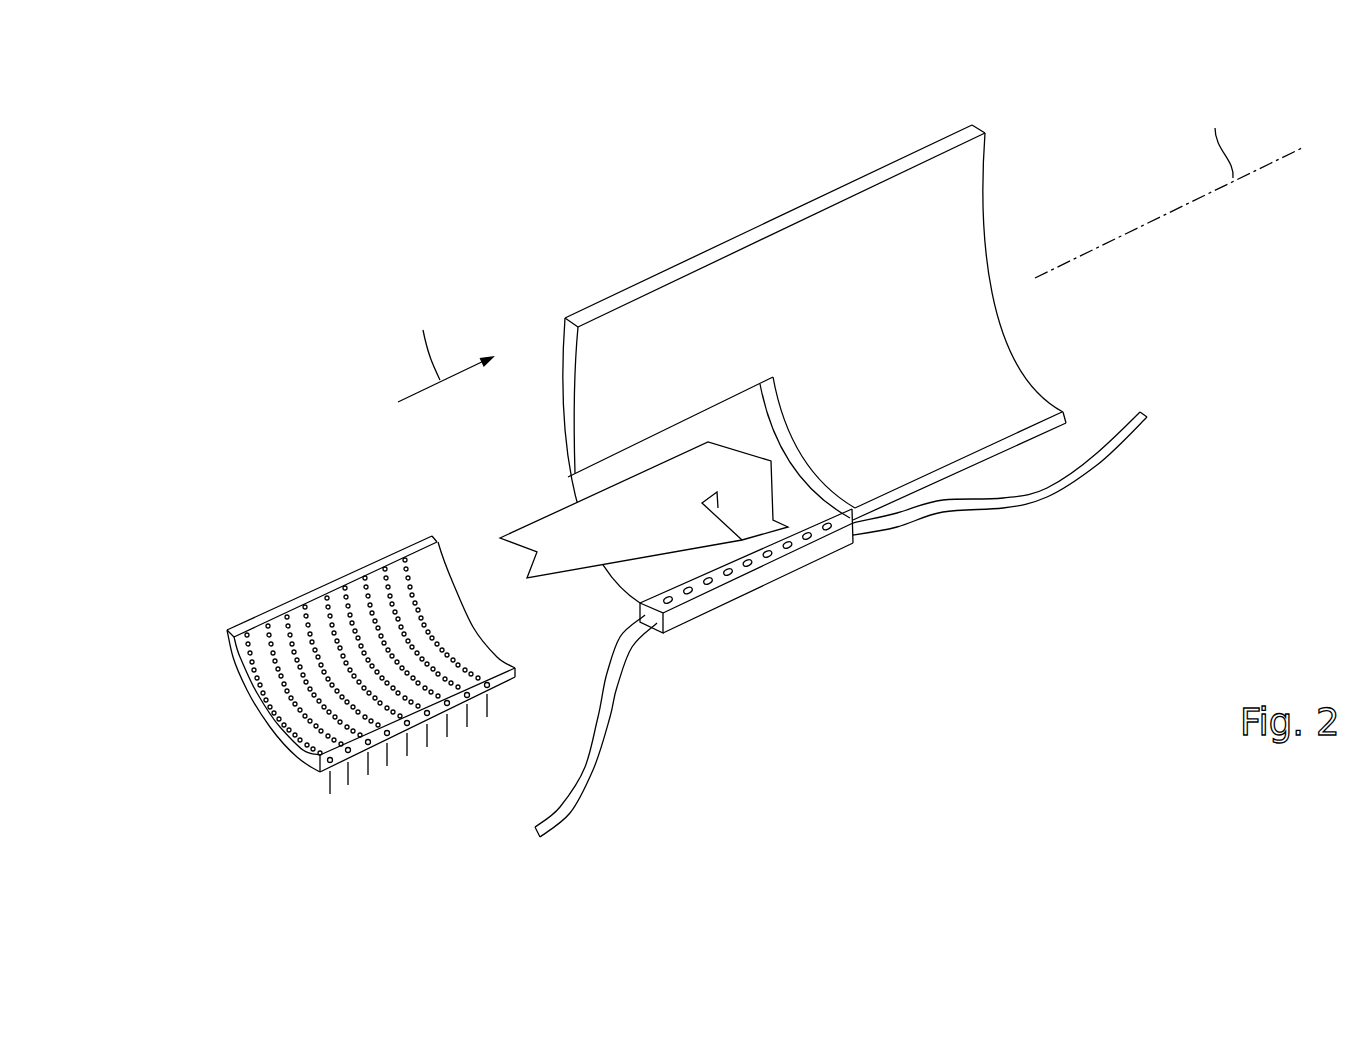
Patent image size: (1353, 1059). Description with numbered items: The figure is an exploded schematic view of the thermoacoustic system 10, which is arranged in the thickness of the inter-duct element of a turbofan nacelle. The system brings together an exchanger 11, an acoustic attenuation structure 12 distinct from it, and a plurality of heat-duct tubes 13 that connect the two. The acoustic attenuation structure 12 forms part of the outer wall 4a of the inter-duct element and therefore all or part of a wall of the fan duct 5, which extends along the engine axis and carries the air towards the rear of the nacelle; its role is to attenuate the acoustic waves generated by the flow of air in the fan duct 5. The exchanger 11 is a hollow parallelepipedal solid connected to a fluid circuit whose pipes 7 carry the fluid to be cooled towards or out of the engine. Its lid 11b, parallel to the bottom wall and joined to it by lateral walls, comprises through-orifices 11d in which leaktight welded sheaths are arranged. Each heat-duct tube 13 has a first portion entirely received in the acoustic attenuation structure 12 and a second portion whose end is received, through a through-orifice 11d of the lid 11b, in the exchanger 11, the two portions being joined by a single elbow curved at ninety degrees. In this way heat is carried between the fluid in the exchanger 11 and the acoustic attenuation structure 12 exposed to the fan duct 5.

The thermoacoustic system 10 is at (296, 361).
The fan duct 5 is at (705, 302).
The outer wall of the inter-duct element 4a is at (867, 220).
The exchanger 11 is at (763, 573).
The lid 11b is at (820, 530).
The through-orifices 11d is at (667, 615).
The pipes 7 is at (1002, 508).
The acoustic attenuation structure 12 is at (420, 557).
The heat-duct tube 13 is at (275, 647).